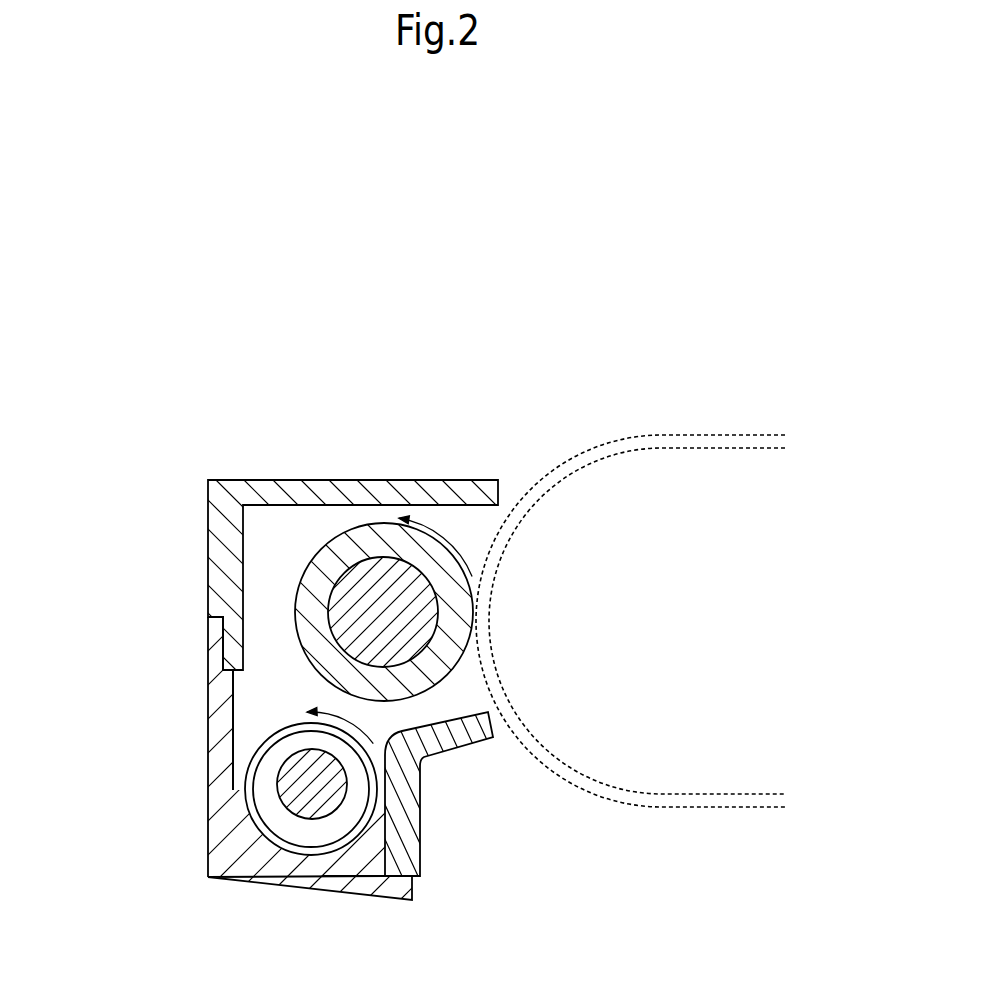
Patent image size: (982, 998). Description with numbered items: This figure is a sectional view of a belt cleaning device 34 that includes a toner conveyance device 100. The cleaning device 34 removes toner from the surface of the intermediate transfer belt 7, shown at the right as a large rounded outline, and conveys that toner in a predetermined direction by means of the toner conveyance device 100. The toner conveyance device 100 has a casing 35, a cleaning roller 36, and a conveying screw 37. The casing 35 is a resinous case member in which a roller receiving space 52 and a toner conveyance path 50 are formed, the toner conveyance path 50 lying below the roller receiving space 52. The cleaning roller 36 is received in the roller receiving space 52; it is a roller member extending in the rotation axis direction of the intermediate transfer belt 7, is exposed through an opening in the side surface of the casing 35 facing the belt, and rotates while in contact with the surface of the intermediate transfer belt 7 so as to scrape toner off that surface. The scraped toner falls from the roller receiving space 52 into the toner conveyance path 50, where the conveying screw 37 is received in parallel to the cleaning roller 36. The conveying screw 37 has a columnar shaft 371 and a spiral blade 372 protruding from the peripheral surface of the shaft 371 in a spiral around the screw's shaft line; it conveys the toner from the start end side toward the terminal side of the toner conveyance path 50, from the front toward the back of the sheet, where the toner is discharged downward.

The intermediate transfer belt 7 is at (663, 433).
The toner conveyance device 100 is at (190, 480).
The cleaning device 34 is at (507, 480).
The cleaning roller 36 is at (347, 523).
The roller receiving space 52 is at (263, 595).
The conveying screw 37 is at (377, 897).
The casing 35 is at (207, 674).
The spiral blade 372 is at (277, 788).
The shaft 371 is at (325, 815).
The toner conveyance path 50 is at (424, 761).